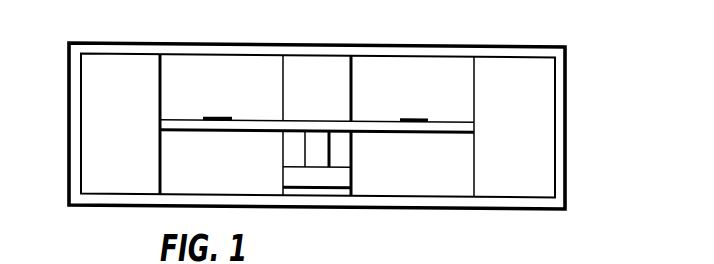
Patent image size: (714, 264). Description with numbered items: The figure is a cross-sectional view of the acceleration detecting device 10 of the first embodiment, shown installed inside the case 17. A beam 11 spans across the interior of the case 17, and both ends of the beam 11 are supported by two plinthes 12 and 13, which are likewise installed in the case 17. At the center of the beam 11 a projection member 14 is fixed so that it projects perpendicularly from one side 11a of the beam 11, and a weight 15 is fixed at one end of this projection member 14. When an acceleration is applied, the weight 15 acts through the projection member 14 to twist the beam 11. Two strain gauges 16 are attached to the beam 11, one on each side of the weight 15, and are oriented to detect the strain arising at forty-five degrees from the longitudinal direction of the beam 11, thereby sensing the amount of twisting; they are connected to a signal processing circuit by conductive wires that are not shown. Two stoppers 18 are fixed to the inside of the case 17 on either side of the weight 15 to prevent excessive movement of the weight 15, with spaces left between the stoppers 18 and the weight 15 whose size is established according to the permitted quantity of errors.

The detecting device 10 is at (572, 92).
The beam 11 is at (172, 120).
The one side of the beam 11a is at (230, 137).
The plinth 12 is at (86, 77).
The plinth 13 is at (509, 68).
The projection member 14 is at (320, 156).
The weight 15 is at (331, 183).
The strain gauge 16 is at (213, 116).
The case 17 is at (496, 208).
The stopper 18 is at (312, 63).